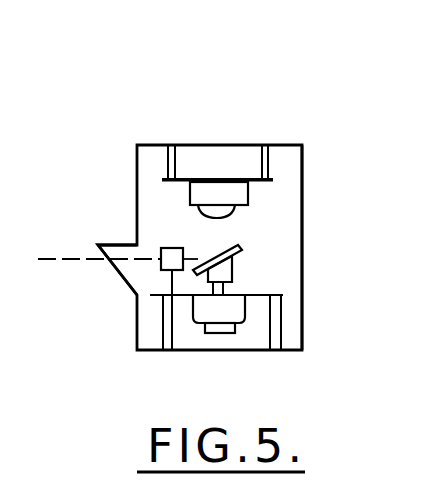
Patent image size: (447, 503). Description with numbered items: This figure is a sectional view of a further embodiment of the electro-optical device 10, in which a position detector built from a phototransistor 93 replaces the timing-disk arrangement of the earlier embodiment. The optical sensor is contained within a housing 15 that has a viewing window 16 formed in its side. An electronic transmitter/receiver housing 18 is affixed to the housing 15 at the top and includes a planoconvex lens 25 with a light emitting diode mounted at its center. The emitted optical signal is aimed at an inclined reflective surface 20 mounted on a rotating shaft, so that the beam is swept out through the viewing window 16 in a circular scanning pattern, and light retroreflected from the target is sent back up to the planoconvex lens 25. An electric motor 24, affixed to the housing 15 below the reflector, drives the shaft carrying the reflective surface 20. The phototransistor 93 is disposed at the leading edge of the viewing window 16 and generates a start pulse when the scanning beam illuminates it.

The electro-optical device 10 is at (108, 164).
The housing 15 is at (307, 216).
The viewing window 16 is at (118, 271).
The electronic transmitter/receiver housing 18 is at (183, 189).
The planoconvex lens 25 is at (234, 208).
The phototransistor 93 is at (161, 251).
The inclined reflective surface 20 is at (241, 268).
The electric motor 24 is at (252, 312).